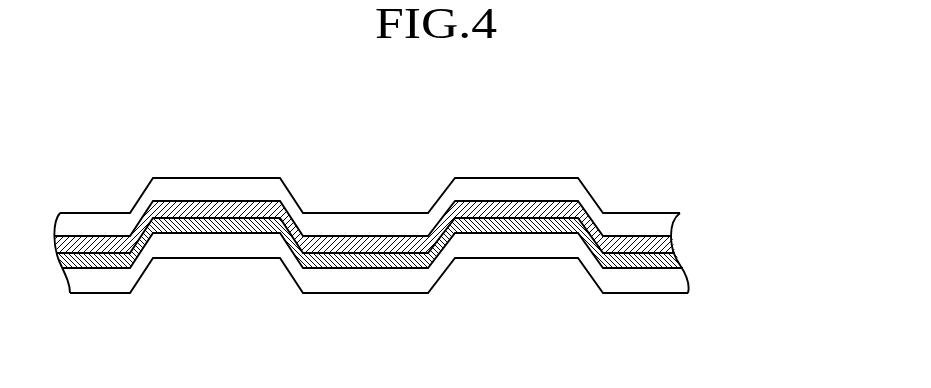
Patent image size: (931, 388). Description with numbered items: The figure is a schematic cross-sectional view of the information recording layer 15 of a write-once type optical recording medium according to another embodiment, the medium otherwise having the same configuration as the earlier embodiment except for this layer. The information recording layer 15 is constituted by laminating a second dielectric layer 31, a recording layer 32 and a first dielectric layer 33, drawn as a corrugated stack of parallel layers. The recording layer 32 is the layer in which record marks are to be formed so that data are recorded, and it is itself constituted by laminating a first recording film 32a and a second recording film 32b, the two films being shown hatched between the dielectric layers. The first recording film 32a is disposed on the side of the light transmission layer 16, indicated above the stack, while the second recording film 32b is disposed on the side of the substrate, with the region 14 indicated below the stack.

The substrate side / lower region 14 is at (395, 366).
The information recording layer 15 is at (544, 168).
The light transmission layer 16 is at (395, 149).
The second dielectric layer 31 is at (668, 280).
The recording layer 32 is at (449, 244).
The first recording film 32a is at (672, 243).
The second recording film 32b is at (670, 260).
The first dielectric layer 33 is at (667, 223).